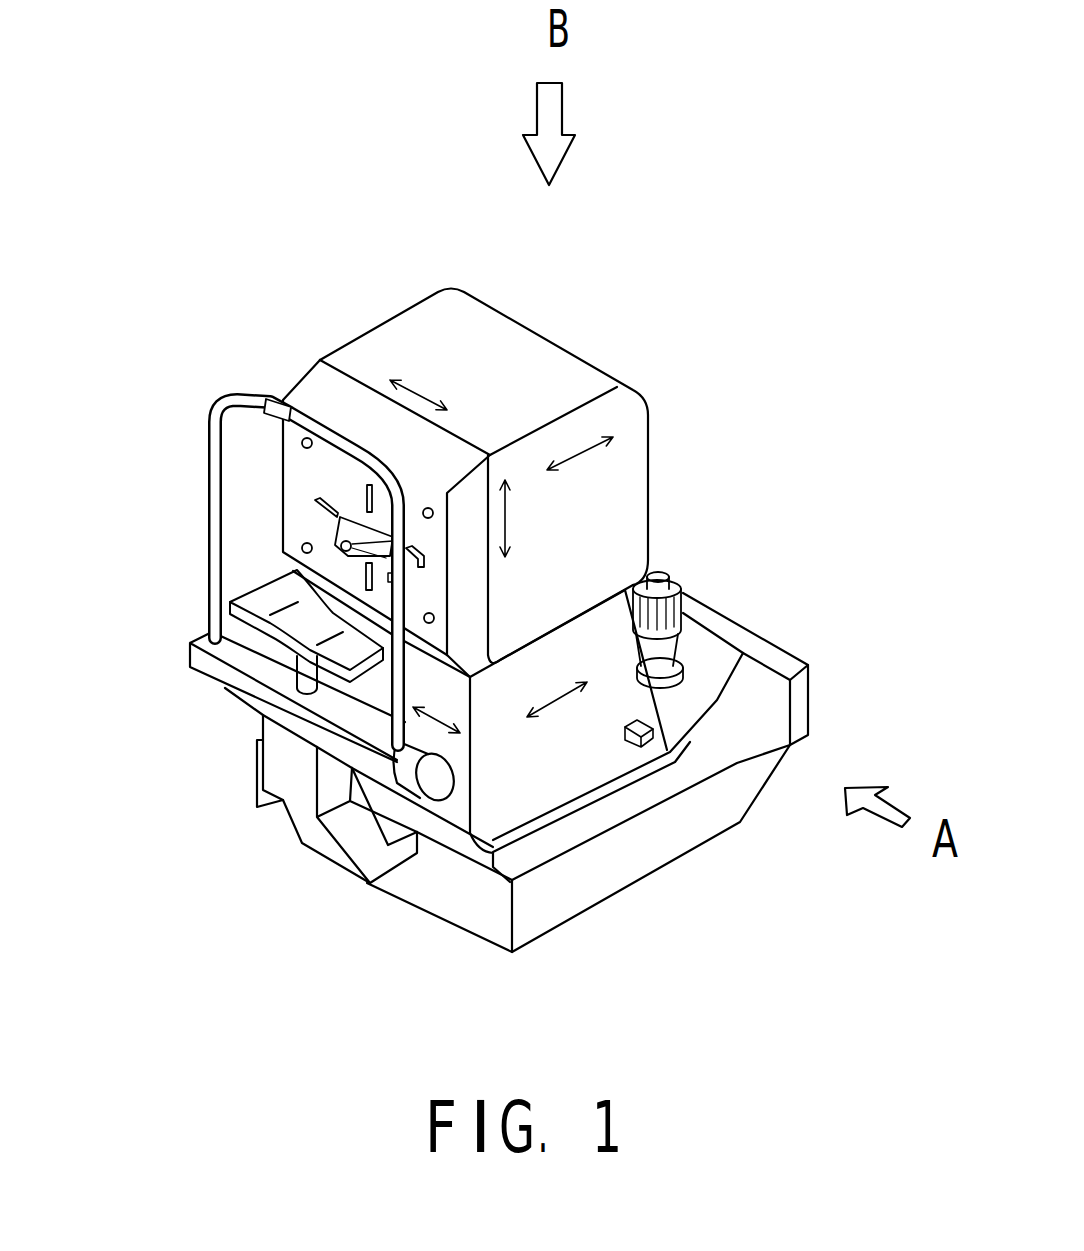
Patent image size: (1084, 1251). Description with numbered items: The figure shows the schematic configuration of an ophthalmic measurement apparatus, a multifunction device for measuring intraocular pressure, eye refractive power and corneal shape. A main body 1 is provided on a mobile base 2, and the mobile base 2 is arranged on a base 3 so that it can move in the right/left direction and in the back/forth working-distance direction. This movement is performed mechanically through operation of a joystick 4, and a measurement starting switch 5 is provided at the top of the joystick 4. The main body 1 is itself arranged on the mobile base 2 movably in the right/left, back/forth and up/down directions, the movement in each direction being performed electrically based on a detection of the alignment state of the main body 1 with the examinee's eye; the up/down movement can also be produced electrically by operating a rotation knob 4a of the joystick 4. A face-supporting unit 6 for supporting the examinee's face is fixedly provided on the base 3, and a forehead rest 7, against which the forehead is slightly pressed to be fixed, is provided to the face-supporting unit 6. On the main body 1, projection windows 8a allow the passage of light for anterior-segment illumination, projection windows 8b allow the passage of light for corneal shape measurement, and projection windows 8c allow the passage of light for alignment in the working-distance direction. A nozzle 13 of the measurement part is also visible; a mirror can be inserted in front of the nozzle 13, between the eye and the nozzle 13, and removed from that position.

The main body 1 is at (392, 345).
The mobile base 2 is at (560, 770).
The base 3 is at (710, 753).
The joystick 4 is at (680, 633).
The rotation knob 4a is at (683, 613).
The measurement starting switch 5 is at (687, 583).
The face-supporting unit 6 is at (165, 478).
The forehead rest 7 is at (280, 403).
The projection windows 8a is at (440, 618).
The projection windows 8b is at (323, 490).
The projection windows 8c is at (343, 547).
The nozzle 13 is at (263, 584).